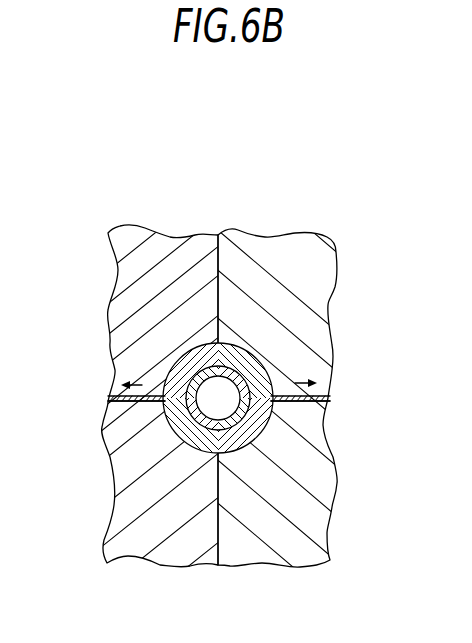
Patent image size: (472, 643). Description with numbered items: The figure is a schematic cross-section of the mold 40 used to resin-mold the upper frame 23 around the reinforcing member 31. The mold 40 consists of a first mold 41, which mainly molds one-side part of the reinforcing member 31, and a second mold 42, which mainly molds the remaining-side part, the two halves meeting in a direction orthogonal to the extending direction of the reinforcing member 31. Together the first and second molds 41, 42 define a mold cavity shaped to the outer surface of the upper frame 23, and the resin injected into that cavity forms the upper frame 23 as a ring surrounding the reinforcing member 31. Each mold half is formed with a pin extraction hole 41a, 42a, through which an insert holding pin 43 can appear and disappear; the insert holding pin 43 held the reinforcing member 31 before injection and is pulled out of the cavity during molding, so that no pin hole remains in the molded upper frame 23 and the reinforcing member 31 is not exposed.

The mold 40 is at (322, 204).
The first mold 41 is at (118, 276).
The second mold 42 is at (333, 297).
The upper frame 23 is at (272, 366).
The reinforcing member 31 is at (248, 386).
The pin extraction hole 41a is at (108, 401).
The pin extraction hole 42a is at (330, 398).
The insert holding pin 43 is at (140, 406).